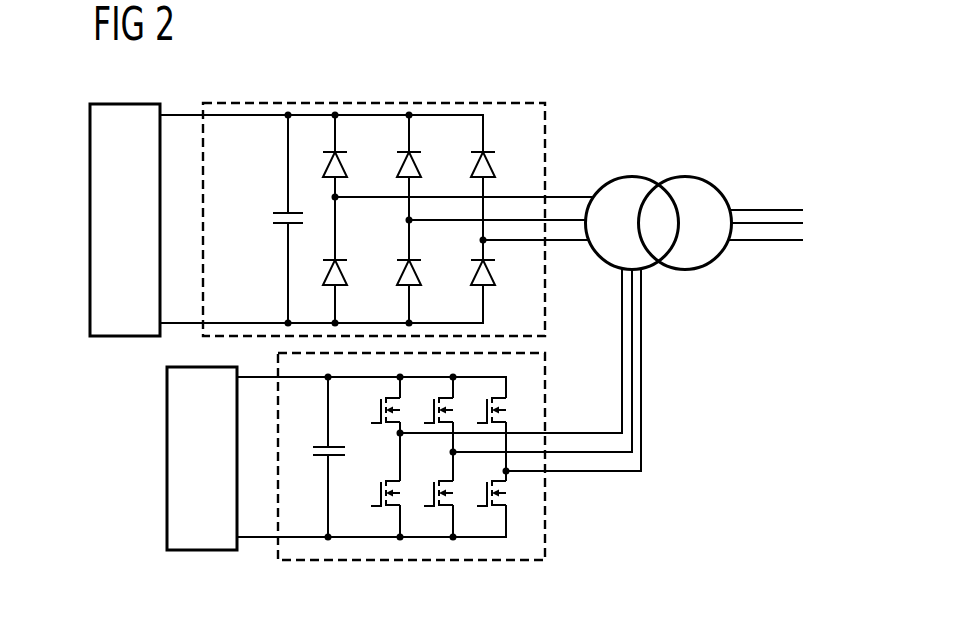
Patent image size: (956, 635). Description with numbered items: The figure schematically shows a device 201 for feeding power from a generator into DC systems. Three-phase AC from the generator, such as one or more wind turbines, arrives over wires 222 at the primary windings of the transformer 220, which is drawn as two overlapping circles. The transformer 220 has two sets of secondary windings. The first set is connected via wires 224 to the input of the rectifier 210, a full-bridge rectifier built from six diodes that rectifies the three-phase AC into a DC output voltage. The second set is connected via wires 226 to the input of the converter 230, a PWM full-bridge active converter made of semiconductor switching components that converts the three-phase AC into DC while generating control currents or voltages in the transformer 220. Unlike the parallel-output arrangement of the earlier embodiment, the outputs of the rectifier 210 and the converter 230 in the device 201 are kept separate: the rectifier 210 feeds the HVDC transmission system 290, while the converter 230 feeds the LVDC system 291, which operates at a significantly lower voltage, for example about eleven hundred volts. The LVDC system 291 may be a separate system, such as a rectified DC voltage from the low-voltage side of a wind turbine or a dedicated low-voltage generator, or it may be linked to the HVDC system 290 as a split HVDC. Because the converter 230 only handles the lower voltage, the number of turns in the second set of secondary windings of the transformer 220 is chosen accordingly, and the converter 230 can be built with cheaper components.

The device 201 is at (590, 90).
The rectifier 210 is at (355, 102).
The transformer 220 is at (658, 184).
The wires 222 is at (769, 207).
The wires 224 is at (568, 196).
The wires 226 is at (643, 355).
The converter 230 is at (545, 513).
The HVDC transmission system 290 is at (126, 343).
The LVDC system 291 is at (167, 465).